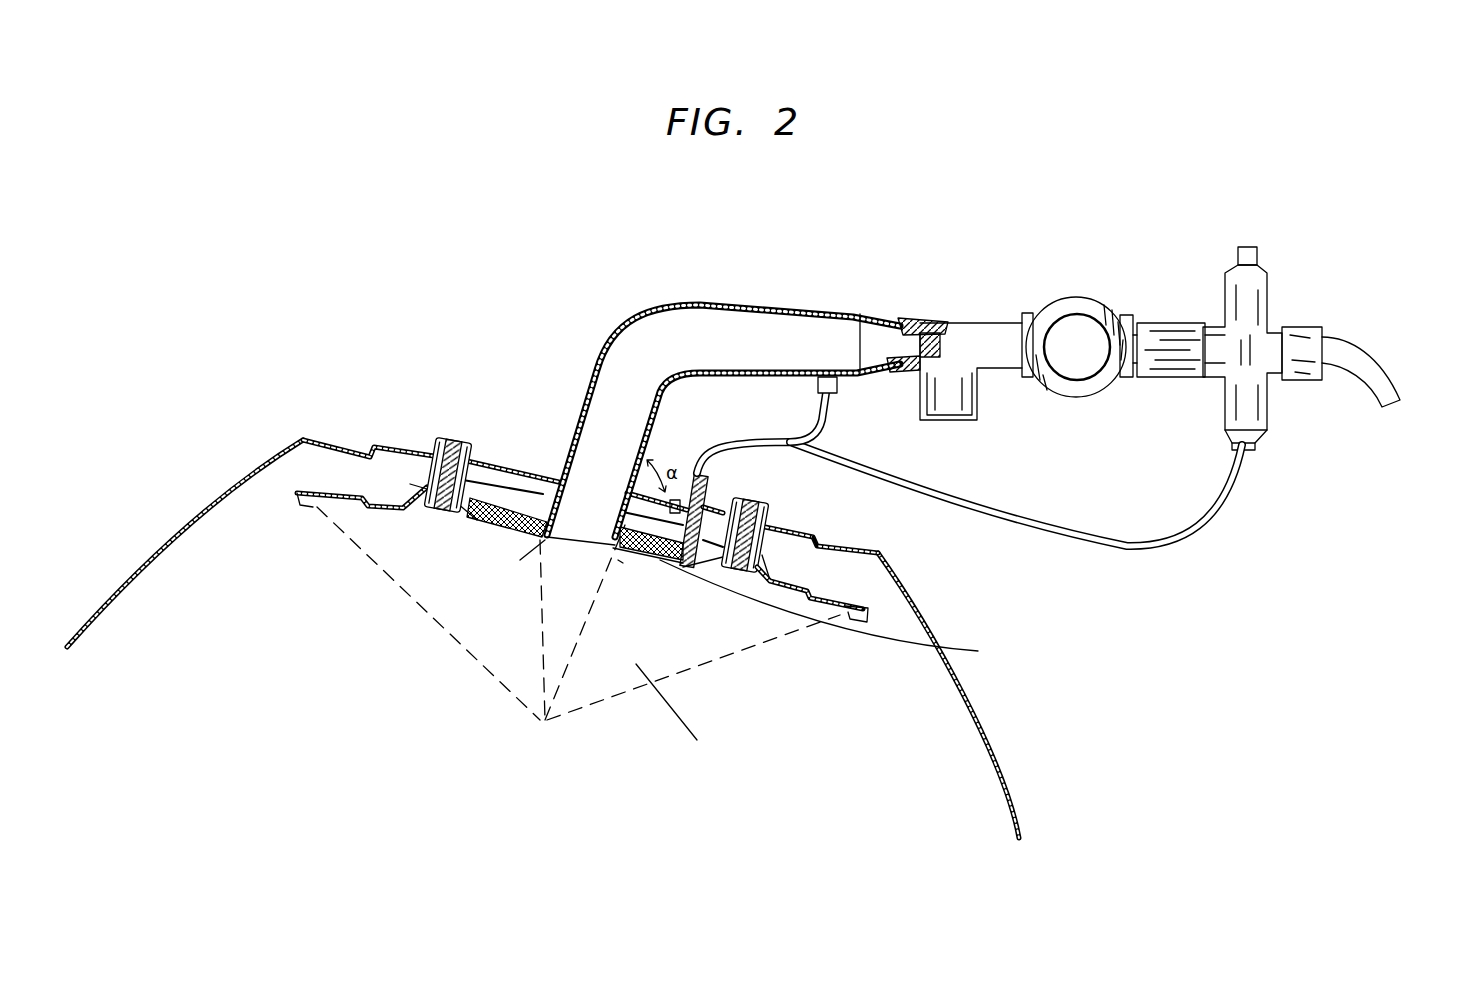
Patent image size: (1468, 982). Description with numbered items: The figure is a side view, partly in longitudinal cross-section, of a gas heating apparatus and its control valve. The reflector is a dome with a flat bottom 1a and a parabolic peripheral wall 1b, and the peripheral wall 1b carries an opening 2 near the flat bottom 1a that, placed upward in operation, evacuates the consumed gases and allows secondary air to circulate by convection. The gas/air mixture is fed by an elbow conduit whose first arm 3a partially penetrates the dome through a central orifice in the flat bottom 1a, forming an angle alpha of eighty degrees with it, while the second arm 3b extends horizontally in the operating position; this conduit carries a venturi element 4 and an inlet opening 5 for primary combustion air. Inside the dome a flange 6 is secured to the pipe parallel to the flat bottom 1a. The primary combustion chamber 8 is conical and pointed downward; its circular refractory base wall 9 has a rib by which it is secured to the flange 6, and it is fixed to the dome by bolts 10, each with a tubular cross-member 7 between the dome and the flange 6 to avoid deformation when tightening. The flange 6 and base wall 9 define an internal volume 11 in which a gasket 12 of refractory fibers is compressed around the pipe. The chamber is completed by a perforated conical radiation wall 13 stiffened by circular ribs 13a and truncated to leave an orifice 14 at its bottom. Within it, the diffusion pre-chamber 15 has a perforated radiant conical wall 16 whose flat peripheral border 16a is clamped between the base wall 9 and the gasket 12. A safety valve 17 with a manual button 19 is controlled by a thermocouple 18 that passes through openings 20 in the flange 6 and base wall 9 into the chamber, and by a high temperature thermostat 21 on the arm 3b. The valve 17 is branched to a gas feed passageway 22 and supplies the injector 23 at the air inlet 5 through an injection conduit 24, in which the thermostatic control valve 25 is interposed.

The flat bottom 1a is at (512, 462).
The parabolic peripheral wall 1b is at (985, 735).
The opening 2 is at (243, 476).
The arm 3a is at (588, 393).
The second arm 3b is at (860, 317).
The venturi element 4 is at (908, 322).
The inlet opening 5 is at (947, 403).
The flange 6 is at (768, 560).
The tubular cross-member 7 is at (427, 457).
The primary combustion chamber 8 is at (675, 708).
The base wall 9 is at (775, 567).
The bolts 10 is at (762, 512).
The internal volume 11 is at (377, 553).
The gasket 12 is at (483, 518).
The conical radiation wall 13 is at (738, 648).
The circular ribs 13a is at (803, 636).
The orifice 14 is at (543, 730).
The diffusion pre-chamber 15 is at (567, 637).
The conical wall 16 is at (540, 620).
The flat peripheral border 16a is at (622, 560).
The safety valve 17 is at (1273, 292).
The thermocouple 18 is at (685, 566).
The manual button 19 is at (1243, 245).
The openings 20 is at (836, 612).
The high temperature thermostat 21 is at (836, 390).
The gas feed passageway 22 is at (1360, 362).
The injector 23 is at (937, 333).
The injection conduit 24 is at (1215, 333).
The control valve 25 is at (1080, 387).